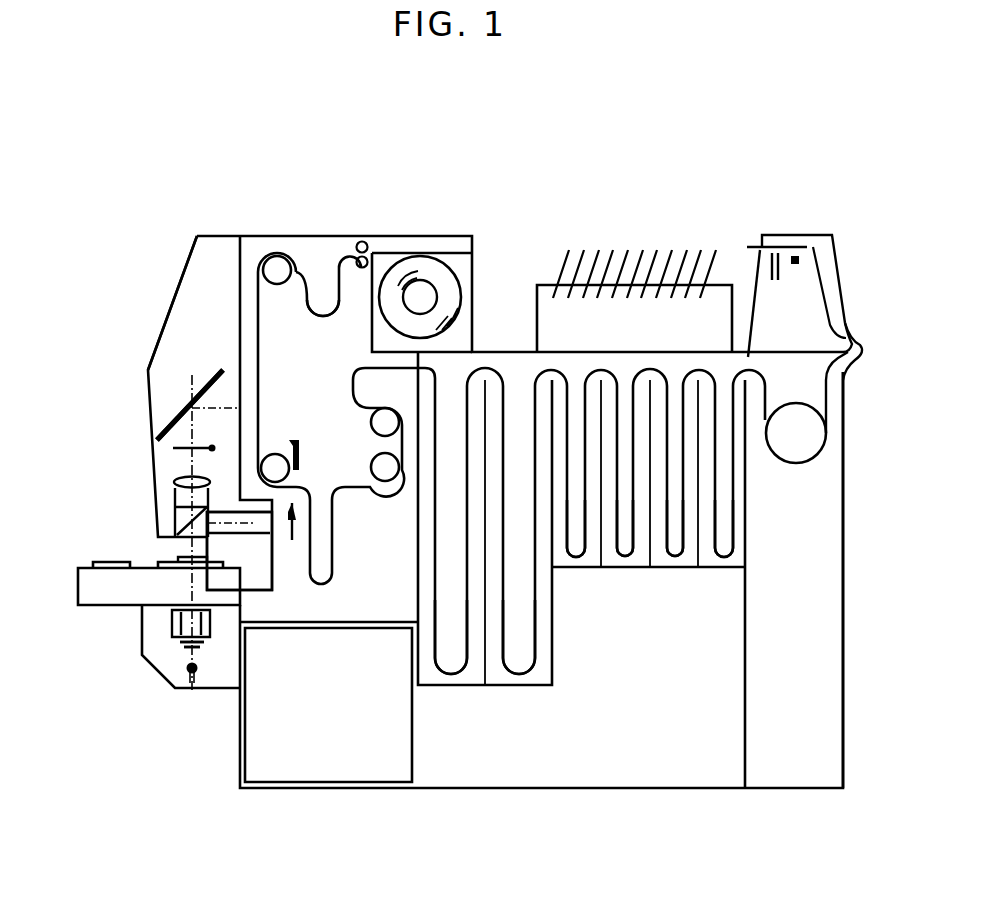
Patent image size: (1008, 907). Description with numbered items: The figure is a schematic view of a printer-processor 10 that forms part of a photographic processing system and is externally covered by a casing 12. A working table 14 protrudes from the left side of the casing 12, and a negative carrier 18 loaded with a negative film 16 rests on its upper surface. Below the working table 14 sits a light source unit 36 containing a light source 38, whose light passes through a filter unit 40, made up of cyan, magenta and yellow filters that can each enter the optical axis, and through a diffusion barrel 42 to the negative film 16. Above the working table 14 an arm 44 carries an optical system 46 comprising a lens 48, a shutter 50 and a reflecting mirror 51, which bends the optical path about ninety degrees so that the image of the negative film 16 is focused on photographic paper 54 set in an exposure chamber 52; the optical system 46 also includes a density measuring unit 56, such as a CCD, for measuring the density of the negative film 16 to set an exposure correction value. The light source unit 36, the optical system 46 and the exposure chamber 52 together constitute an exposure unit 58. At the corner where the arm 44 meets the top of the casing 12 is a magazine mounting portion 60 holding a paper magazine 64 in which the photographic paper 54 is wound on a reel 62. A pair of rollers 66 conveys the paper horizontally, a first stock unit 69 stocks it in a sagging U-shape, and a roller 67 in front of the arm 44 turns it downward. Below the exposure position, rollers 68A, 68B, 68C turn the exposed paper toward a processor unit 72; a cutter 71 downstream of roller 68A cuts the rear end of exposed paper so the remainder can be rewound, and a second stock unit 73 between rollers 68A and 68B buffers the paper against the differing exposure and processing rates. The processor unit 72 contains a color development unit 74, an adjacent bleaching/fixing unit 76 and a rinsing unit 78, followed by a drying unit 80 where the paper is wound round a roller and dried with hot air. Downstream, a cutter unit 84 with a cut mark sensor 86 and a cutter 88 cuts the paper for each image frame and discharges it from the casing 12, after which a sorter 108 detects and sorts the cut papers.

The printer-processor 10 is at (523, 201).
The casing 12 is at (318, 236).
The working table 14 is at (80, 600).
The negative film 16 is at (187, 560).
The negative carrier 18 is at (172, 570).
The light source unit 36 is at (153, 666).
The light source 38 is at (205, 673).
The filter unit 40 is at (212, 646).
The diffusion barrel 42 is at (210, 625).
The arm 44 is at (187, 320).
The optical system 46 is at (176, 457).
The lens 48 is at (160, 489).
The shutter 50 is at (173, 448).
The reflecting mirror 51 is at (200, 373).
The exposure chamber 52 is at (216, 356).
The photographic paper 54 is at (260, 334).
The density measuring unit 56 is at (252, 524).
The exposure unit 58 is at (140, 826).
The magazine mounting portion 60 is at (372, 257).
The reel 62 is at (432, 293).
The paper magazine 64 is at (471, 260).
The pair of rollers 66 is at (366, 246).
The roller 67 is at (275, 265).
The roller 68A is at (285, 463).
The roller 68B is at (383, 465).
The roller 68C is at (380, 420).
The first stock unit 69 is at (322, 287).
The cutter 71 is at (284, 534).
The processor unit 72 is at (733, 826).
The second stock unit 73 is at (322, 577).
The color development unit 74 is at (462, 678).
The bleaching/fixing unit 76 is at (527, 676).
The rinsing unit 78 is at (735, 574).
The drying unit 80 is at (828, 665).
The cutter unit 84 is at (796, 235).
The cut mark sensor 86 is at (800, 260).
The cutter 88 is at (760, 265).
The sorter 108 is at (550, 285).